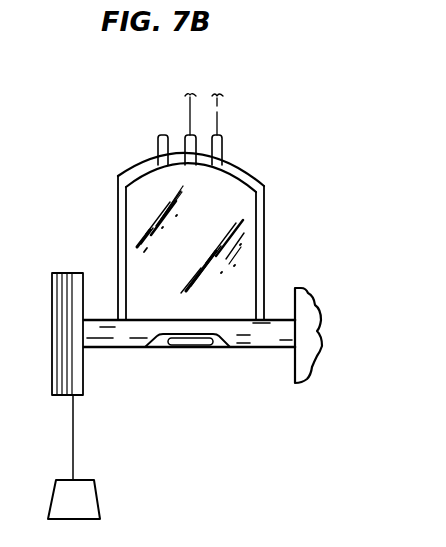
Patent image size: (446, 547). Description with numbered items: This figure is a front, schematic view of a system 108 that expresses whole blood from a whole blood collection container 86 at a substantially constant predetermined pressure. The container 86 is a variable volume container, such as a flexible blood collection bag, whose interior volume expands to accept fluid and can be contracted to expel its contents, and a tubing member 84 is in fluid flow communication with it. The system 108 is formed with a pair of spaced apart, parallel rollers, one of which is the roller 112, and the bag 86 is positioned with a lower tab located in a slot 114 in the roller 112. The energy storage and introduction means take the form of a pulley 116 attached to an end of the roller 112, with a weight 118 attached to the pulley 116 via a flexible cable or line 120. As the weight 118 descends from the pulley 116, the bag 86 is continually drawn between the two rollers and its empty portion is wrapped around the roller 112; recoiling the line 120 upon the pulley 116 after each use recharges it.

The tubing member 84 is at (219, 108).
The whole blood collection container 86 is at (200, 248).
The system 108 is at (212, 363).
The roller 112 is at (107, 348).
The slot 114 is at (192, 316).
The pulley 116 is at (73, 273).
The weight 118 is at (52, 495).
The flexible cable or line 120 is at (73, 430).